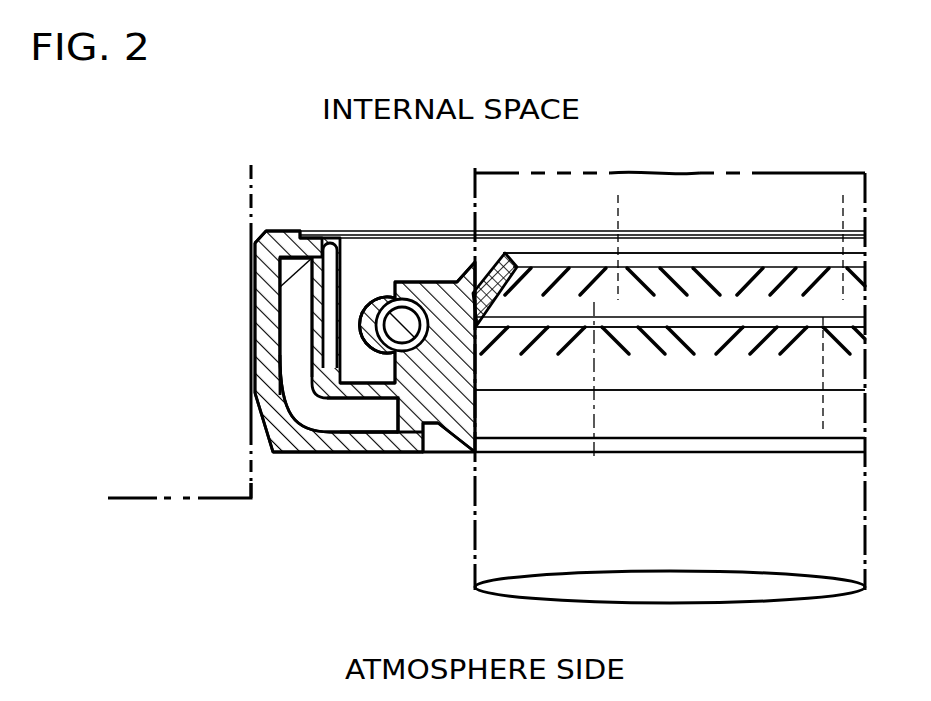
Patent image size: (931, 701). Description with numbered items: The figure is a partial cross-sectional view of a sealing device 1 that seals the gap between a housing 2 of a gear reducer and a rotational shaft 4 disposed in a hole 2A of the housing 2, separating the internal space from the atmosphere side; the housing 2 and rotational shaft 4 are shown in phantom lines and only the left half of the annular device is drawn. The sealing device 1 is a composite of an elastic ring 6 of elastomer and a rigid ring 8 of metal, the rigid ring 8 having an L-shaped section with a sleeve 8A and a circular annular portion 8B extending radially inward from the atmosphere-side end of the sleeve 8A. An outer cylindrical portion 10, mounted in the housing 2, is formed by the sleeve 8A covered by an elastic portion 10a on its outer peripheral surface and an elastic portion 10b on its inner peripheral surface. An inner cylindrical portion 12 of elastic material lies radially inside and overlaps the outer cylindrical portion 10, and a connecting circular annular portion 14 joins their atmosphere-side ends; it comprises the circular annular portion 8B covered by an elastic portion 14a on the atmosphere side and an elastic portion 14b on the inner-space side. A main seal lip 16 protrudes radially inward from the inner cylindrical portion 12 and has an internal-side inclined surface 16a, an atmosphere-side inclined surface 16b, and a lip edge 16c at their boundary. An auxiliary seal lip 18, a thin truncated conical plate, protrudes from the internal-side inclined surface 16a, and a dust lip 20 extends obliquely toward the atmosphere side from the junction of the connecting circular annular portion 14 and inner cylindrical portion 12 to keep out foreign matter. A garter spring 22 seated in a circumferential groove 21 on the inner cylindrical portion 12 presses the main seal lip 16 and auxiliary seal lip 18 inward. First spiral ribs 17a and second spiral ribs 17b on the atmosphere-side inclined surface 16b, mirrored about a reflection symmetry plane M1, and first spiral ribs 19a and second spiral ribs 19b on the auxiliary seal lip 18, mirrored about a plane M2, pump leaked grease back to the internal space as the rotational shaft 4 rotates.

The sealing device 1 is at (297, 212).
The housing 2 is at (153, 490).
The hole 2A is at (255, 488).
The rotational shaft 4 is at (483, 548).
The elastic ring 6 is at (267, 292).
The rigid ring 8 is at (282, 330).
The sleeve 8A is at (282, 312).
The circular annular portion 8B is at (340, 420).
The outer cylindrical portion 10 is at (283, 357).
The elastic portion 10a is at (258, 375).
The elastic portion 10b is at (256, 395).
The inner cylindrical portion 12 is at (430, 281).
The connecting circular annular portion 14 is at (322, 450).
The elastic portion 14a is at (398, 448).
The elastic portion 14b is at (377, 452).
The main seal lip 16 is at (492, 352).
The internal-side inclined surface 16a is at (728, 325).
The atmosphere-side inclined surface 16b is at (688, 358).
The lip edge 16c is at (727, 327).
The first spiral ribs 17a is at (528, 350).
The second spiral ribs 17b is at (675, 357).
The auxiliary seal lip 18 is at (493, 260).
The first spiral ribs 19a is at (673, 285).
The second spiral ribs 19b is at (588, 288).
The dust lip 20 is at (477, 455).
The circumferential groove 21 is at (378, 319).
The garter spring 22 is at (384, 300).
The reflection symmetry plane M1 is at (594, 460).
The reflection symmetry plane M2 is at (618, 195).